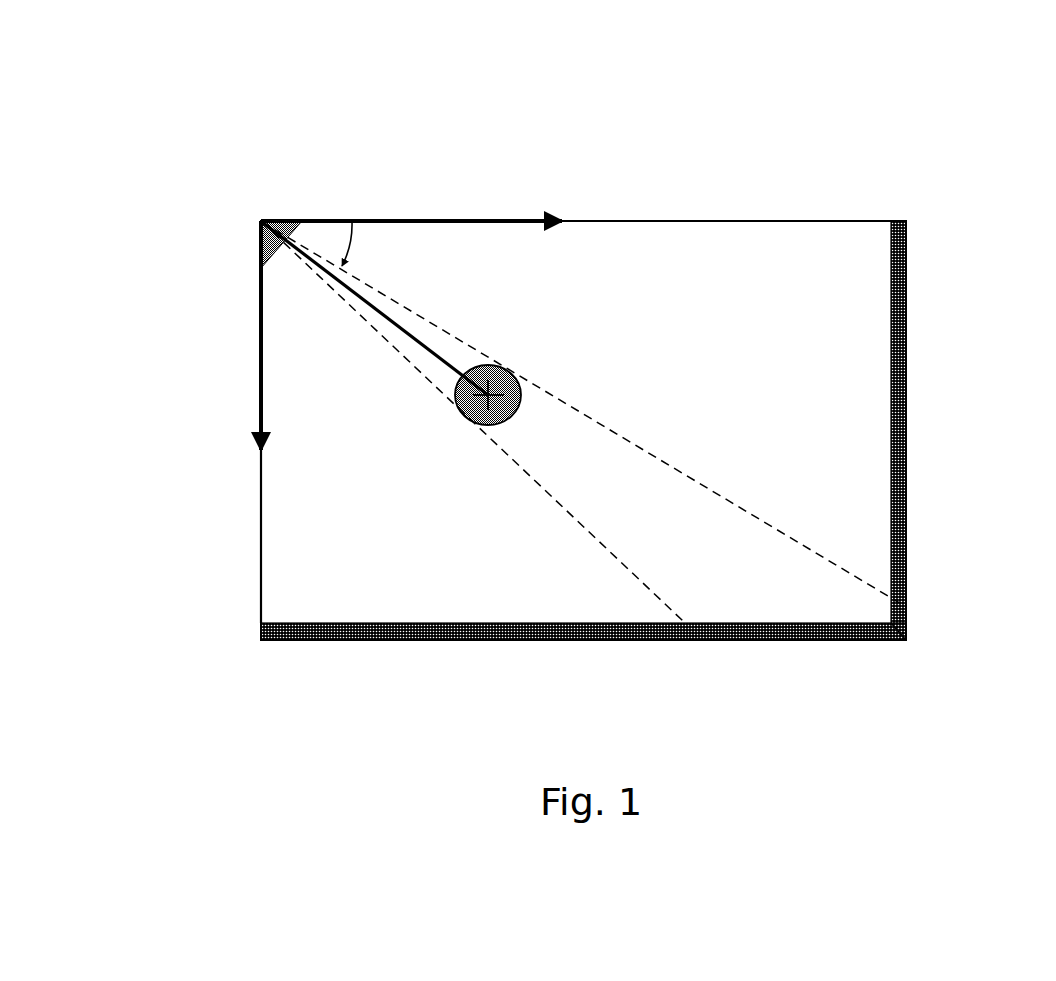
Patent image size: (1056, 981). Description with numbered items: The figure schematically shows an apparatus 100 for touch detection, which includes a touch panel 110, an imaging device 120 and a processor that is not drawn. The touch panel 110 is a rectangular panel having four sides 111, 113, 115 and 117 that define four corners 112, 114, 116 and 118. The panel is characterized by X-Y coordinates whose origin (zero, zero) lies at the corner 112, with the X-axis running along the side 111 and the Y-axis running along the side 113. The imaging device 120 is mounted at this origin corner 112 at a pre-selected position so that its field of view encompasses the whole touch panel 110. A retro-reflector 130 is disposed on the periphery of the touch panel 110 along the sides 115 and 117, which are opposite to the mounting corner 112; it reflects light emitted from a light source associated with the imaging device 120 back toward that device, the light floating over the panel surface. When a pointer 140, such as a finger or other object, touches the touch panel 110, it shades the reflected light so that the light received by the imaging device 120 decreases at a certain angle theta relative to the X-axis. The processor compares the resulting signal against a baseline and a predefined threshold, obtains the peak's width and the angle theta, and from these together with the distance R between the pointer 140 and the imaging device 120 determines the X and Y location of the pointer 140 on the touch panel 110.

The apparatus for touch detection 100 is at (617, 57).
The touch panel 110 is at (697, 302).
The side 111 is at (606, 220).
The corner 112 is at (257, 222).
The side 113 is at (259, 397).
The corner 114 is at (258, 630).
The side 115 is at (463, 641).
The corner 116 is at (910, 637).
The side 117 is at (906, 452).
The corner 118 is at (903, 220).
The imaging device 120 is at (279, 222).
The retro-reflector 130 is at (900, 385).
The pointer 140 is at (496, 374).